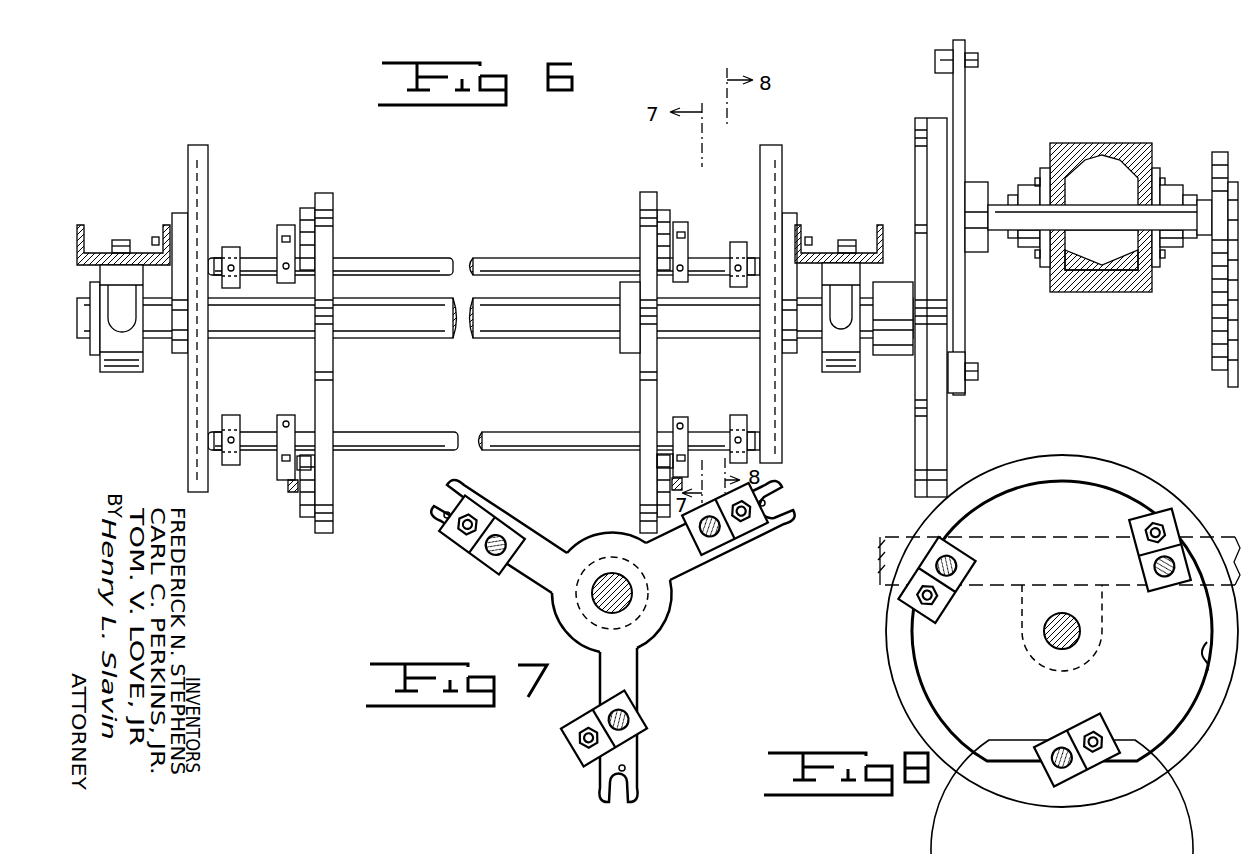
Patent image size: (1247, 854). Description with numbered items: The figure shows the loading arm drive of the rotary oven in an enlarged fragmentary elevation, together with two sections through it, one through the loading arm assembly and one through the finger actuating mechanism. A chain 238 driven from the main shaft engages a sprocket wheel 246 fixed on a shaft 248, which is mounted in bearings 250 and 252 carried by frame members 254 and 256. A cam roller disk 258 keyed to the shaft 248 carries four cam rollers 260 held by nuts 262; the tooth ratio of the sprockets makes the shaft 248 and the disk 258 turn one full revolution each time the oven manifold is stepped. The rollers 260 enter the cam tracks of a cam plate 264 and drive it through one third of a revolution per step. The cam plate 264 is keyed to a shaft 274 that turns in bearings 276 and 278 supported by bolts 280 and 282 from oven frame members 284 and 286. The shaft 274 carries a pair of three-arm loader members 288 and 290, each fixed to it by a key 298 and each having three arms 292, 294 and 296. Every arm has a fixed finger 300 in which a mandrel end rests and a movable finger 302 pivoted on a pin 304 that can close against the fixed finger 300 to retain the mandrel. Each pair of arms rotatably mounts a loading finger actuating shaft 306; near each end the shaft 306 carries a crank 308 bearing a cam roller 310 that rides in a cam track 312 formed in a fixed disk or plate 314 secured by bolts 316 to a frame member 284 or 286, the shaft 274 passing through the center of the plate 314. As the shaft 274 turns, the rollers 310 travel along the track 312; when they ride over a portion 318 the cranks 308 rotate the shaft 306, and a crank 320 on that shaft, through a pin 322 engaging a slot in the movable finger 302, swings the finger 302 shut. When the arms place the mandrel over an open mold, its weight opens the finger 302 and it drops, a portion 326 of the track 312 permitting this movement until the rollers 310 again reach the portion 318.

In FIG. 6, the chain 238 is at (1214, 330).
In FIG. 6, the sprocket wheel 246 is at (1220, 152).
In FIG. 6, the shaft 248 is at (1200, 200).
In FIG. 6, the bearing 250 is at (1176, 250).
In FIG. 6, the bearing 252 is at (1028, 247).
In FIG. 6, the frame member 254 is at (1120, 292).
In FIG. 6, the frame member 256 is at (1075, 292).
In FIG. 6, the cam roller disk 258 is at (965, 165).
In FIG. 6, the cam roller 260 is at (935, 62).
In FIG. 6, the nut 262 is at (980, 195).
In FIG. 6, the cam plate 264 is at (915, 448).
In FIG. 6, the shaft 274 is at (704, 338).
In FIG. 7, the shaft 274 is at (640, 605).
In FIG. 8, the shaft 274 is at (1082, 630).
In FIG. 6, the bearing 276 is at (118, 372).
In FIG. 6, the bearing 278 is at (840, 372).
In FIG. 6, the bolt 280 is at (122, 240).
In FIG. 6, the bolt 282 is at (847, 240).
In FIG. 6, the oven frame member 284 is at (82, 225).
In FIG. 6, the oven frame member 286 is at (880, 225).
In FIG. 8, the oven frame member 286 is at (877, 598).
In FIG. 6, the three-arm loader member 288 is at (349, 394).
In FIG. 6, the three-arm loader member 290 is at (630, 371).
In FIG. 7, the arm 292 is at (536, 548).
In FIG. 7, the arm 294 is at (700, 572).
In FIG. 7, the arm 296 is at (637, 671).
In FIG. 7, the key 298 is at (590, 582).
In FIG. 6, the fixed finger 300 is at (333, 196).
In FIG. 7, the fixed finger 300 is at (432, 508).
In FIG. 6, the movable finger 302 is at (307, 208).
In FIG. 7, the movable finger 302 is at (455, 475).
In FIG. 7, the pin 304 is at (444, 519).
In FIG. 6, the loading finger actuating shaft 306 is at (546, 258).
In FIG. 7, the loading finger actuating shaft 306 is at (497, 558).
In FIG. 8, the loading finger actuating shaft 306 is at (968, 565).
In FIG. 6, the crank 308 is at (280, 247).
In FIG. 8, the crank 308 is at (945, 596).
In FIG. 6, the cam roller 310 is at (230, 247).
In FIG. 8, the cam roller 310 is at (1172, 514).
In FIG. 6, the cam track 312 is at (202, 186).
In FIG. 8, the cam track 312 is at (1102, 488).
In FIG. 6, the disk or plate 314 is at (208, 158).
In FIG. 8, the disk or plate 314 is at (1070, 462).
In FIG. 6, the bolt 316 is at (158, 237).
In FIG. 8, the portion of track 318 is at (965, 735).
In FIG. 6, the crank 320 is at (285, 283).
In FIG. 7, the crank 320 is at (495, 532).
In FIG. 6, the pin 322 is at (313, 463).
In FIG. 8, the portion of track 326 is at (1208, 662).